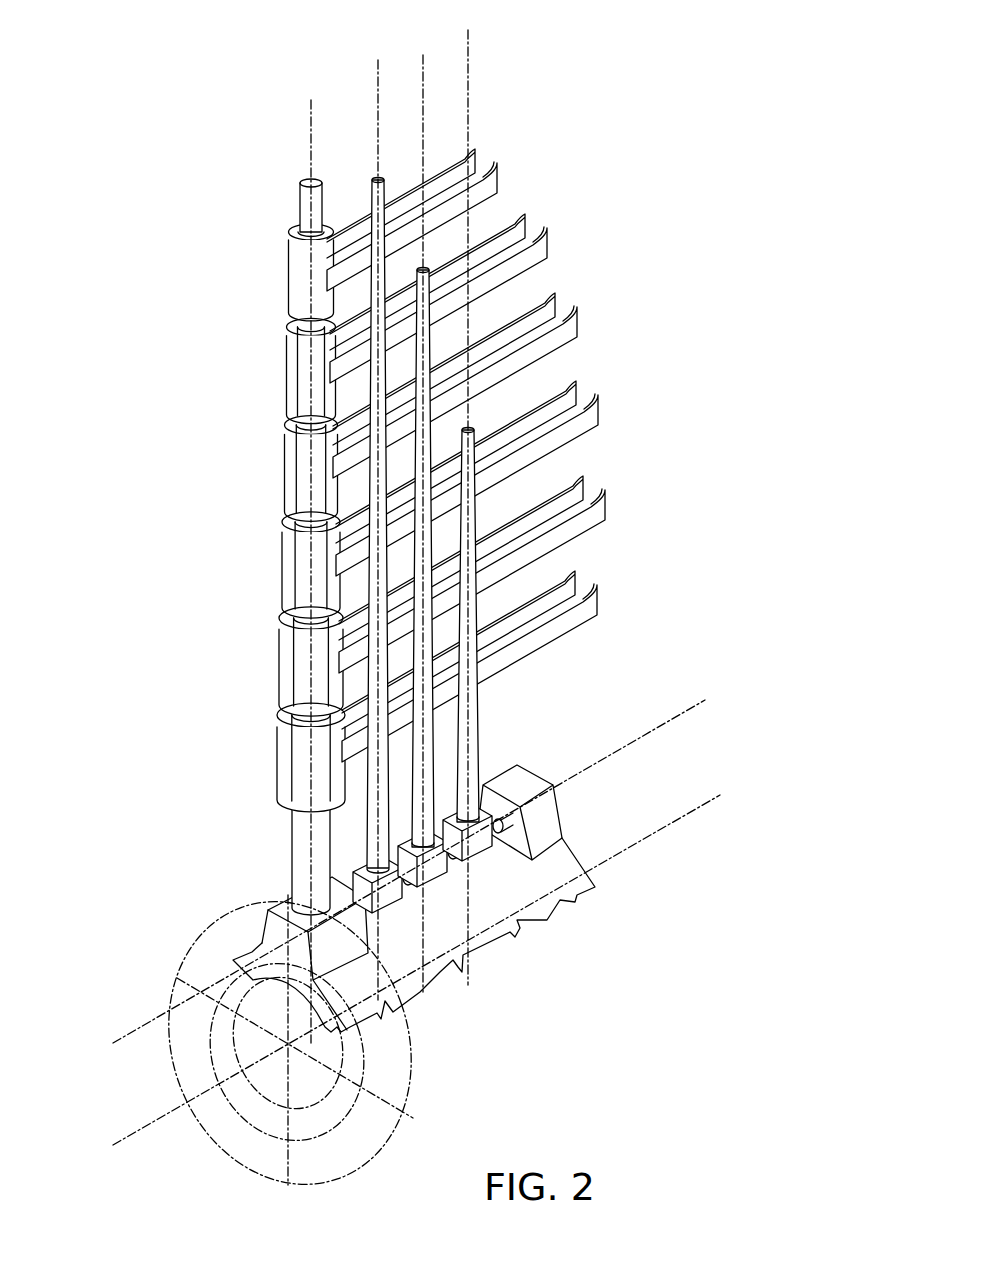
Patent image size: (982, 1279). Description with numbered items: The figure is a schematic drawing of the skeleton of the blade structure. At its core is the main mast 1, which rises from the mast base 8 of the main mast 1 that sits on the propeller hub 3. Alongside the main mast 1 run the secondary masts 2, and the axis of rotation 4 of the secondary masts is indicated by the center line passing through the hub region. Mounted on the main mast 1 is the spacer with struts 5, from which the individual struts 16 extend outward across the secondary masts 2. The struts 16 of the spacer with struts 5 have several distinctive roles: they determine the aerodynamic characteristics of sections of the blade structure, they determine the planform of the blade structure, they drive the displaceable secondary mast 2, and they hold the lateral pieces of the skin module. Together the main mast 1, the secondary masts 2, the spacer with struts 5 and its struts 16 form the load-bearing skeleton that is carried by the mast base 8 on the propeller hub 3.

The main mast 1 is at (298, 186).
The secondary mast 2 is at (467, 100).
The propeller hub 3 is at (522, 888).
The axis of rotation 4 is at (662, 730).
The spacer with struts 5 is at (293, 664).
The mast base 8 is at (300, 887).
The strut 16 is at (547, 440).